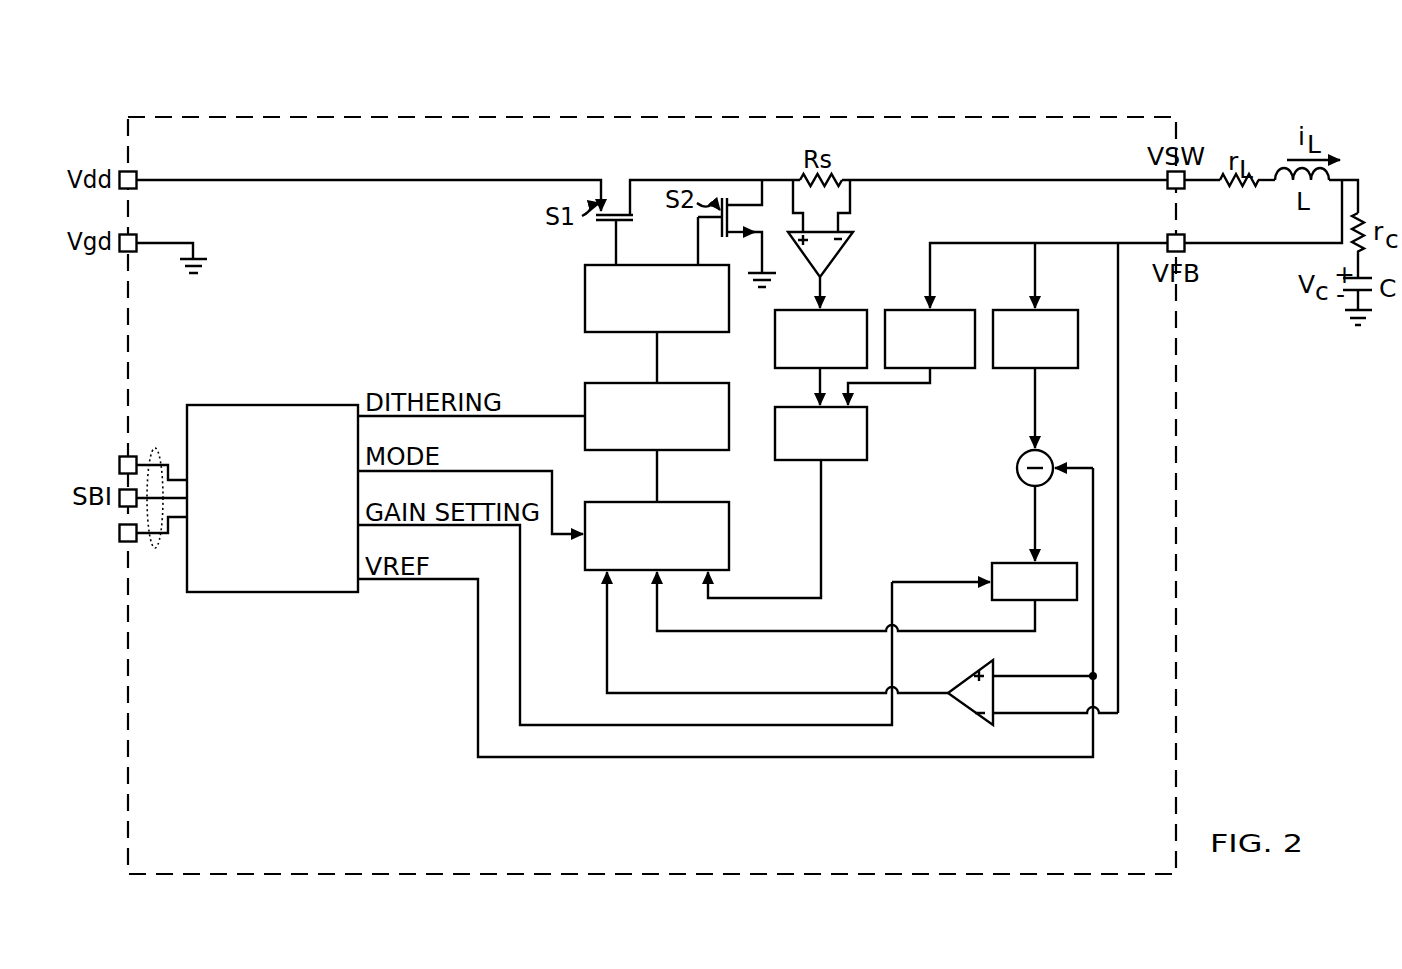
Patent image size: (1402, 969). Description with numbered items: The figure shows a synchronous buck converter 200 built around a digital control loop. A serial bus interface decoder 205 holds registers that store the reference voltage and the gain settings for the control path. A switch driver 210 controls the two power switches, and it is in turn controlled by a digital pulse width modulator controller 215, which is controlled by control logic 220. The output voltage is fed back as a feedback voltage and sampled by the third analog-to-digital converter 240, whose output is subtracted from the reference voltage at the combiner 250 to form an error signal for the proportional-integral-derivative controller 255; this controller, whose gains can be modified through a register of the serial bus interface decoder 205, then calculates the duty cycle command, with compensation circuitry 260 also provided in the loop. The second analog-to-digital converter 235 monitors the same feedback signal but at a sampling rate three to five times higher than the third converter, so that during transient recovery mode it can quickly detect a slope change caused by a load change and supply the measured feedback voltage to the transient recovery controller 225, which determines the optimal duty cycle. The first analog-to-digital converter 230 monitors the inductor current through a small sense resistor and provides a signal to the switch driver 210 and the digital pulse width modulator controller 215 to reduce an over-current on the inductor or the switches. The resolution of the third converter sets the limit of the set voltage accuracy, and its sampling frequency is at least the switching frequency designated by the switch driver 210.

The synchronous buck converter 200 is at (630, 454).
The serial bus interface (SBI) decoder 205 is at (272, 484).
The switch driver 210 is at (646, 313).
The digital pulse width modulator (DPWM) controller 215 is at (668, 401).
The control logic 220 is at (670, 521).
The transient recovery controller (TRC) 225 is at (841, 448).
The first analog-to-digital converter (ADC1) 230 is at (836, 324).
The second analog-to-digital converter (ADC2) 235 is at (946, 324).
The third analog-to-digital converter (ADC0) 240 is at (1053, 324).
The combiner 250 is at (1003, 468).
The proportional-integral-derivative (PID) controller 255 is at (1017, 565).
The compensation circuitry 260 is at (953, 684).